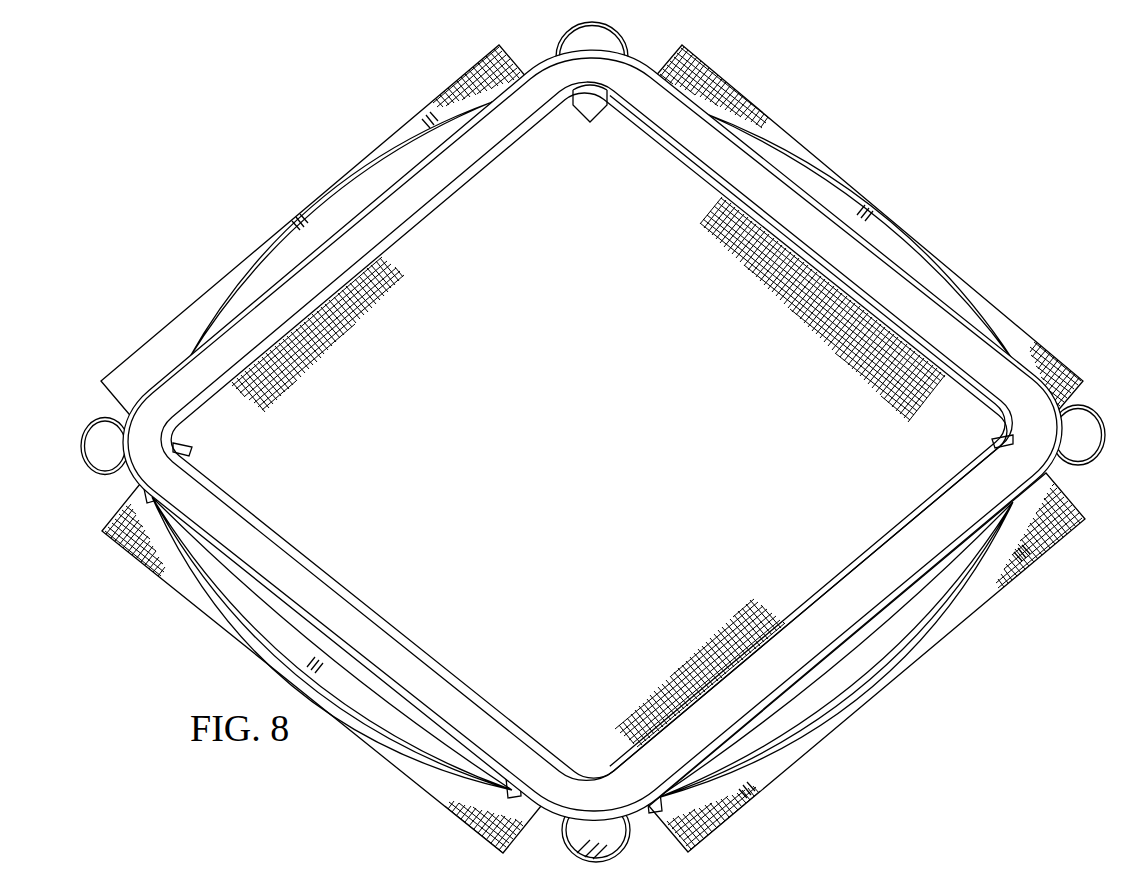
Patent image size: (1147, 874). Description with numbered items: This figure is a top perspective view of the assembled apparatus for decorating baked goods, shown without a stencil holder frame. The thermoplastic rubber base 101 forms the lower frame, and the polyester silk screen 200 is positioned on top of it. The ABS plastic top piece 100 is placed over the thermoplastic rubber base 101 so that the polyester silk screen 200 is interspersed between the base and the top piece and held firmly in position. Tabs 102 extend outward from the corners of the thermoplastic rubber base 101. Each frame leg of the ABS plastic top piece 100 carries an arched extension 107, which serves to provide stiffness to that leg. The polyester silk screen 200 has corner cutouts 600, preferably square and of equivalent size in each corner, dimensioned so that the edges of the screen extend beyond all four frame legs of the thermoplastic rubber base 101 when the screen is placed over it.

The ABS plastic top piece 100 is at (165, 366).
The thermoplastic rubber base 101 is at (92, 478).
The tabs 102 is at (97, 436).
The arched extension 107 is at (903, 246).
The polyester silk screen 200 is at (607, 444).
The corner cutouts 600 is at (1082, 378).